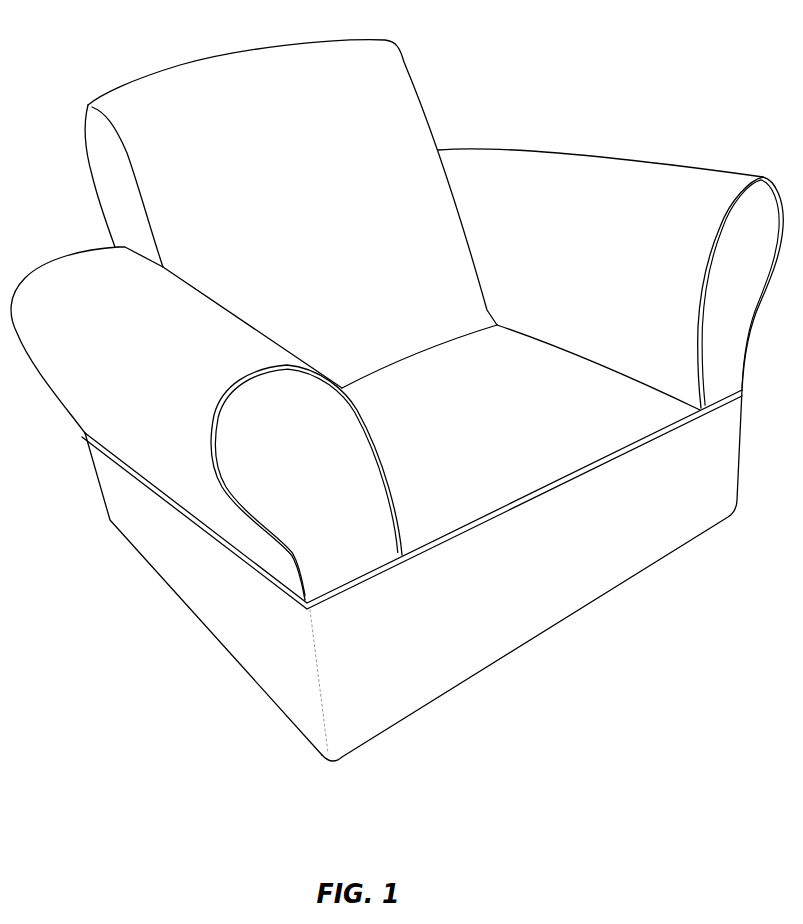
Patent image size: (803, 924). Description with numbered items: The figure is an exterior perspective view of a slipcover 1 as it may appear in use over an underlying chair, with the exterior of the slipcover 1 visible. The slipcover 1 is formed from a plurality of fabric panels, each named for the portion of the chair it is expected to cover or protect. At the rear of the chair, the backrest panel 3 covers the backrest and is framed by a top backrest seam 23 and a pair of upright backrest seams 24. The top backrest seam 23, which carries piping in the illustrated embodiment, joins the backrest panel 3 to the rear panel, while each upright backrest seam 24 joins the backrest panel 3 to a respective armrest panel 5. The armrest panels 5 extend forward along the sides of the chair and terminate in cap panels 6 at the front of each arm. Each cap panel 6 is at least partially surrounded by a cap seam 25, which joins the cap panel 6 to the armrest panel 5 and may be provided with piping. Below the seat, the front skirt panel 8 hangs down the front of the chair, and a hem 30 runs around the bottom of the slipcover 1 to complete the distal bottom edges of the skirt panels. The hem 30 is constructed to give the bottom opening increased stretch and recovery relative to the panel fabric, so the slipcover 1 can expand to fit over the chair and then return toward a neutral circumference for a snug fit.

The slipcover 1 is at (185, 82).
The backrest panel 3 is at (365, 130).
The armrest panel 5 is at (615, 192).
The cap panel 6 is at (333, 533).
The front skirt panel 8 is at (255, 630).
The top backrest seam 23 is at (107, 175).
The upright backrest seam 24 is at (453, 200).
The cap seam 25 is at (300, 578).
The hem 30 is at (198, 620).